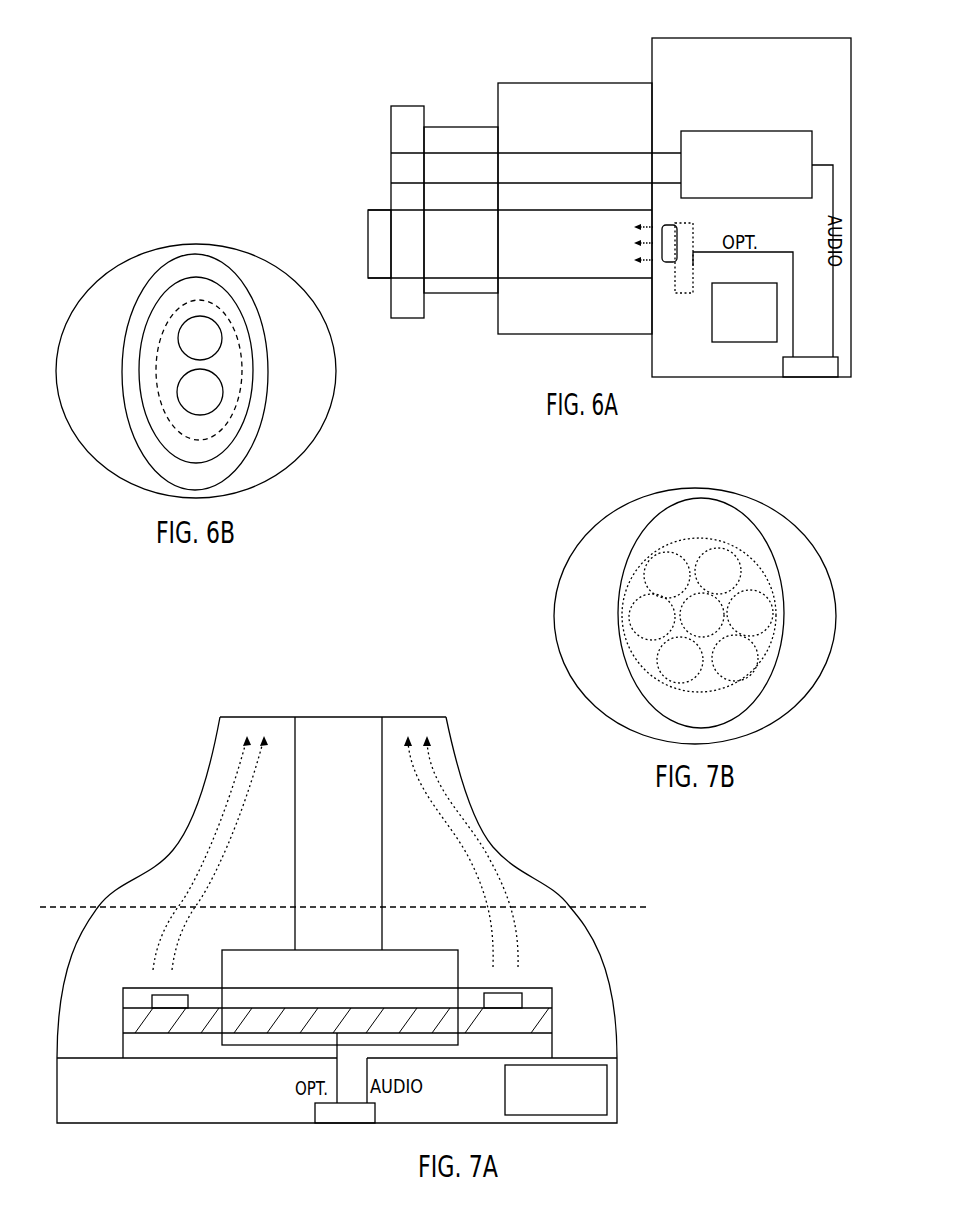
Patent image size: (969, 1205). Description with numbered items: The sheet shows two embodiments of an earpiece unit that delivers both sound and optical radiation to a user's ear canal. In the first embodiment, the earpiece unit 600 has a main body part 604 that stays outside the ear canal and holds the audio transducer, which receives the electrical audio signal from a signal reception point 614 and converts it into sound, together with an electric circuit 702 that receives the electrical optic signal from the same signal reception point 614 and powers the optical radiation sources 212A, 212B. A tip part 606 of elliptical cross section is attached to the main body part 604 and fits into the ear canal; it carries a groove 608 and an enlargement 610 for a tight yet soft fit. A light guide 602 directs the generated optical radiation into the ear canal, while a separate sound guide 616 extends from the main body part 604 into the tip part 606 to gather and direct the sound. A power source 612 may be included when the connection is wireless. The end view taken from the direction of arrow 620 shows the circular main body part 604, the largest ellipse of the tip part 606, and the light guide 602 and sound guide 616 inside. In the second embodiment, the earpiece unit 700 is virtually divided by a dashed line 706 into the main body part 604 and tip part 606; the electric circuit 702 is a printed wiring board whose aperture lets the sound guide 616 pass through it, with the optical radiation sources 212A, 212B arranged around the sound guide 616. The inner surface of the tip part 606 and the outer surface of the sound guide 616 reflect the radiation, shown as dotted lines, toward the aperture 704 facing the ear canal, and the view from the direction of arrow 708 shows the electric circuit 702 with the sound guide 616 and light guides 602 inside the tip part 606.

In FIG. 6A, the earpiece unit 600 is at (358, 68).
In FIG. 6A, the light guide 602 is at (537, 235).
In FIG. 6B, the light guide 602 is at (186, 401).
In FIG. 7B, the light guide 602 is at (653, 585).
In FIG. 6A, the main body part 604 is at (688, 75).
In FIG. 6B, the main body part 604 is at (333, 347).
In FIG. 7B, the main body part 604 is at (828, 578).
In FIG. 7A, the main body part 604 is at (613, 1013).
In FIG. 6A, the tip part 606 is at (533, 114).
In FIG. 6B, the tip part 606 is at (267, 340).
In FIG. 7B, the tip part 606 is at (783, 570).
In FIG. 7A, the tip part 606 is at (492, 848).
In FIG. 6A, the groove 608 is at (476, 127).
In FIG. 6B, the groove 608 is at (239, 400).
In FIG. 6A, the enlargement 610 is at (407, 106).
In FIG. 6B, the enlargement 610 is at (257, 368).
In FIG. 6A, the power source 612 is at (767, 336).
In FIG. 7A, the power source 612 is at (592, 1115).
In FIG. 6A, the signal reception point 614 is at (828, 379).
In FIG. 7A, the signal reception point 614 is at (313, 1117).
In FIG. 6A, the sound guide 616 is at (536, 168).
In FIG. 6B, the sound guide 616 is at (186, 347).
In FIG. 7B, the sound guide 616 is at (688, 624).
In FIG. 7A, the sound guide 616 is at (331, 758).
In FIG. 6A, the arrow 620 is at (336, 173).
In FIG. 6A, the electric circuit 702 is at (682, 293).
In FIG. 7B, the electric circuit 702 is at (773, 650).
In FIG. 7A, the electric circuit 702 is at (206, 1036).
In FIG. 7A, the earpiece unit 700 is at (166, 774).
In FIG. 7A, the aperture 704 is at (412, 717).
In FIG. 7A, the dashed line 706 is at (587, 902).
In FIG. 7A, the arrow 708 is at (323, 707).
In FIG. 7A, the optical radiation source 212A is at (152, 995).
In FIG. 7A, the optical radiation source 212B is at (522, 993).